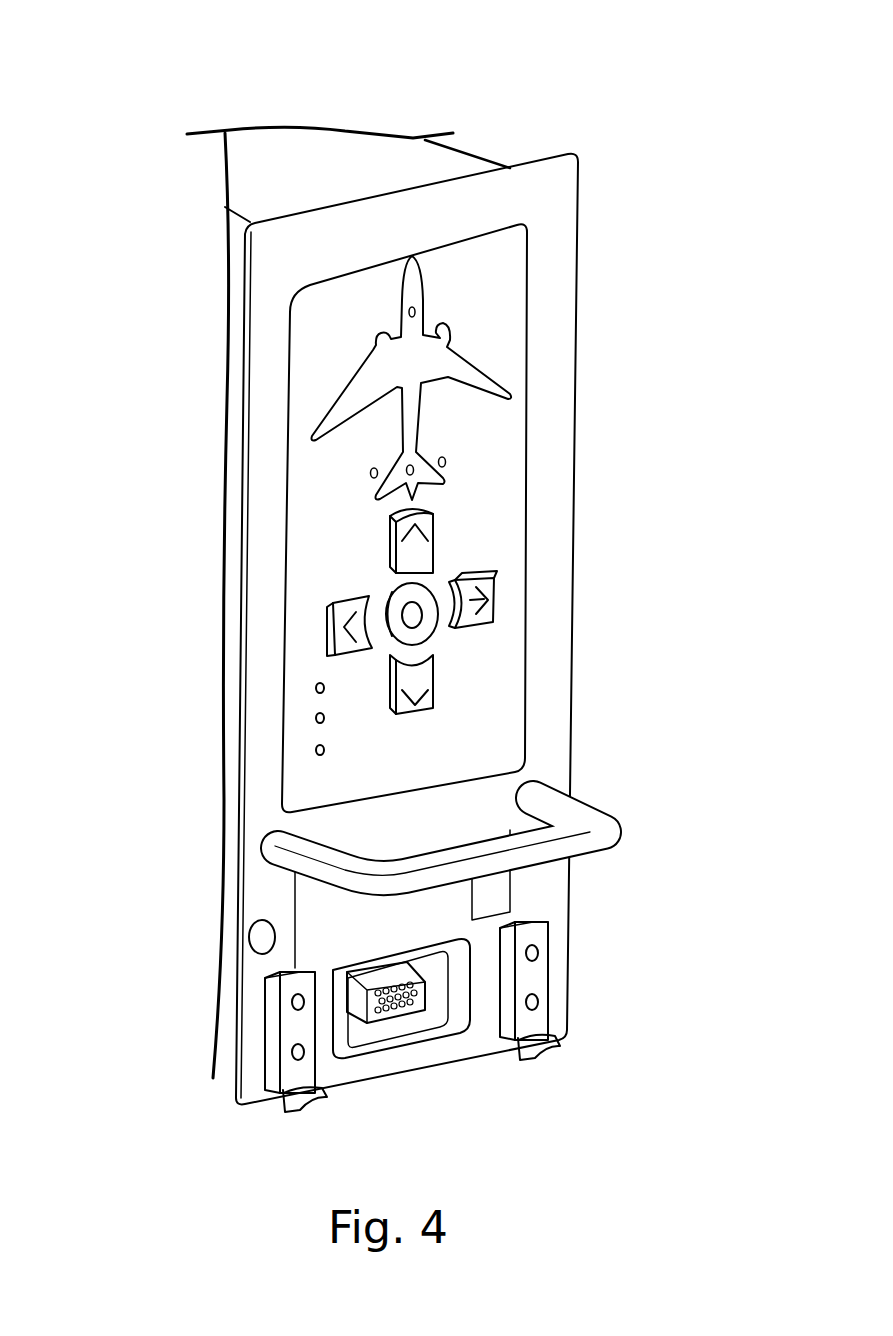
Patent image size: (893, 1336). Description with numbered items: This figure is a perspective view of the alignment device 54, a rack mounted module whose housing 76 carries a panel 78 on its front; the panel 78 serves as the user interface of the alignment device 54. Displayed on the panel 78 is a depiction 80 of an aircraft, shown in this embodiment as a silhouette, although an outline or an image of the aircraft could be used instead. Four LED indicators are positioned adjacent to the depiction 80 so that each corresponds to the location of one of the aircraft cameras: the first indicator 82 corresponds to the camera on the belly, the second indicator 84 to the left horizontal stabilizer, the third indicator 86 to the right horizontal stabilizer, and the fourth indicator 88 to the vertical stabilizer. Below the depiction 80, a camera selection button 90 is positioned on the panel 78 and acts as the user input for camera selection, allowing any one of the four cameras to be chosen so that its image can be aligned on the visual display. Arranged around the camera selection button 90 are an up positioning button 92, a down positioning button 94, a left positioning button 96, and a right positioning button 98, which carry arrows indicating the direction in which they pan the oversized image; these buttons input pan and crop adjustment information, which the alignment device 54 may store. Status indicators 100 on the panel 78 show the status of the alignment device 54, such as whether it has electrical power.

The alignment device 54 is at (404, 556).
The housing 76 is at (480, 155).
The panel 78 is at (310, 313).
The depiction 80 is at (490, 373).
The first indicator 82 is at (415, 311).
The second indicator 84 is at (370, 473).
The third indicator 86 is at (445, 461).
The fourth indicator 88 is at (414, 471).
The camera selection button 90 is at (427, 633).
The up positioning button 92 is at (420, 548).
The down positioning button 94 is at (390, 664).
The left positioning button 96 is at (332, 619).
The right positioning button 98 is at (492, 598).
The status indicators 100 is at (298, 717).